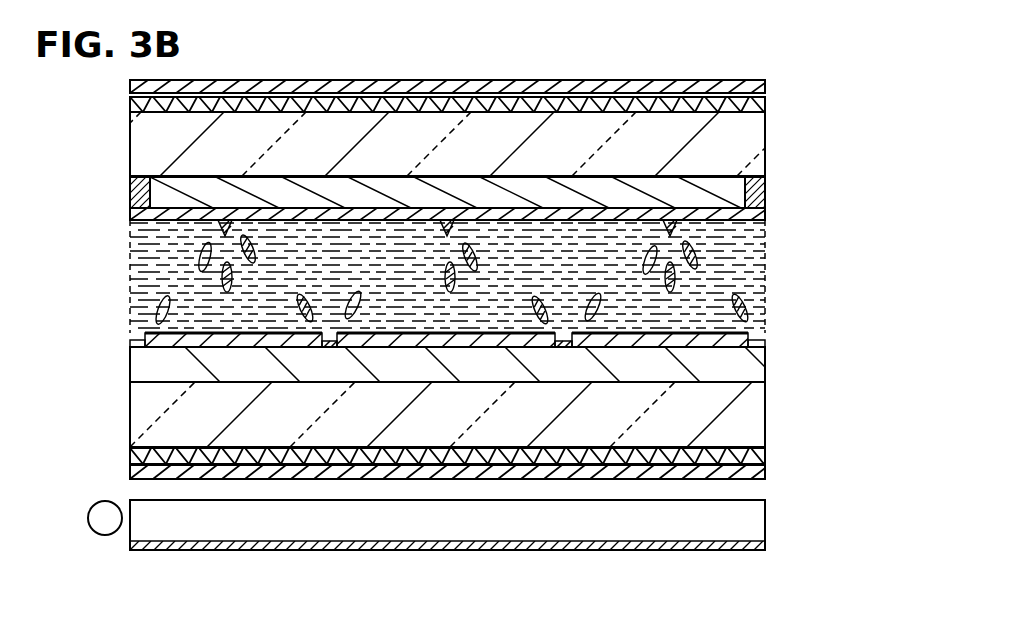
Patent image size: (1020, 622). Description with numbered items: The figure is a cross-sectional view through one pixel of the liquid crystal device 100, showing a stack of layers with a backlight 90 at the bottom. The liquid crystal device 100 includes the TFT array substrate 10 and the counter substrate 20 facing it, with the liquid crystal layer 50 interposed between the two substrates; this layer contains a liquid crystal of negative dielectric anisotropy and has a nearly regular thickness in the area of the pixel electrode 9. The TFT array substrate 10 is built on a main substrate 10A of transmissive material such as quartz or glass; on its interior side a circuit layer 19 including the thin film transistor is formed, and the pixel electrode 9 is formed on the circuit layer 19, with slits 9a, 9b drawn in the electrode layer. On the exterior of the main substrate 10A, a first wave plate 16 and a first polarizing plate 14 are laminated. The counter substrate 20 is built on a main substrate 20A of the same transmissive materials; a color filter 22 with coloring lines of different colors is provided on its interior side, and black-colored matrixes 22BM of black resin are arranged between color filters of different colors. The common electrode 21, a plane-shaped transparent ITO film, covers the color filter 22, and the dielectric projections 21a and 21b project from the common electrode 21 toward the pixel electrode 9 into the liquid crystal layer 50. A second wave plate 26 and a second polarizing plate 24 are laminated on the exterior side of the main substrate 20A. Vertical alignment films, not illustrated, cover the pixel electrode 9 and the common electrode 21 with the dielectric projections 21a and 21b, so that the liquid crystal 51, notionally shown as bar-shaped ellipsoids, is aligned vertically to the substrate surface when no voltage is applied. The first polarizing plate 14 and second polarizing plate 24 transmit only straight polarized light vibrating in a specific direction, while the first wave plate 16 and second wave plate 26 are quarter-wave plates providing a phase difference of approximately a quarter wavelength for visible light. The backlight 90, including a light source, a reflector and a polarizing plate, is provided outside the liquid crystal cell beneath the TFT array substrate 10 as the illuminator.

The liquid crystal device 100 is at (769, 77).
The counter substrate 20 is at (125, 80).
The second polarizing plate 24 is at (761, 88).
The second wave plate 26 is at (761, 105).
The main substrate 20A is at (753, 147).
The color filter 22 is at (753, 173).
The black-colored matrix 22BM is at (763, 197).
The common electrode 21 is at (763, 220).
The dielectric projection 21a is at (225, 223).
The dielectric projection 21b is at (672, 226).
The liquid crystal layer 50 is at (763, 290).
The liquid crystal 51 is at (255, 246).
The pixel electrode 9 is at (685, 333).
The slit in pixel electrode 9a is at (133, 333).
The slit in pixel electrode 9b is at (565, 332).
The TFT array substrate 10 is at (125, 347).
The circuit layer 19 is at (753, 367).
The main substrate 10A is at (753, 413).
The first wave plate 16 is at (757, 455).
The first polarizing plate 14 is at (757, 472).
The backlight 90 is at (770, 500).